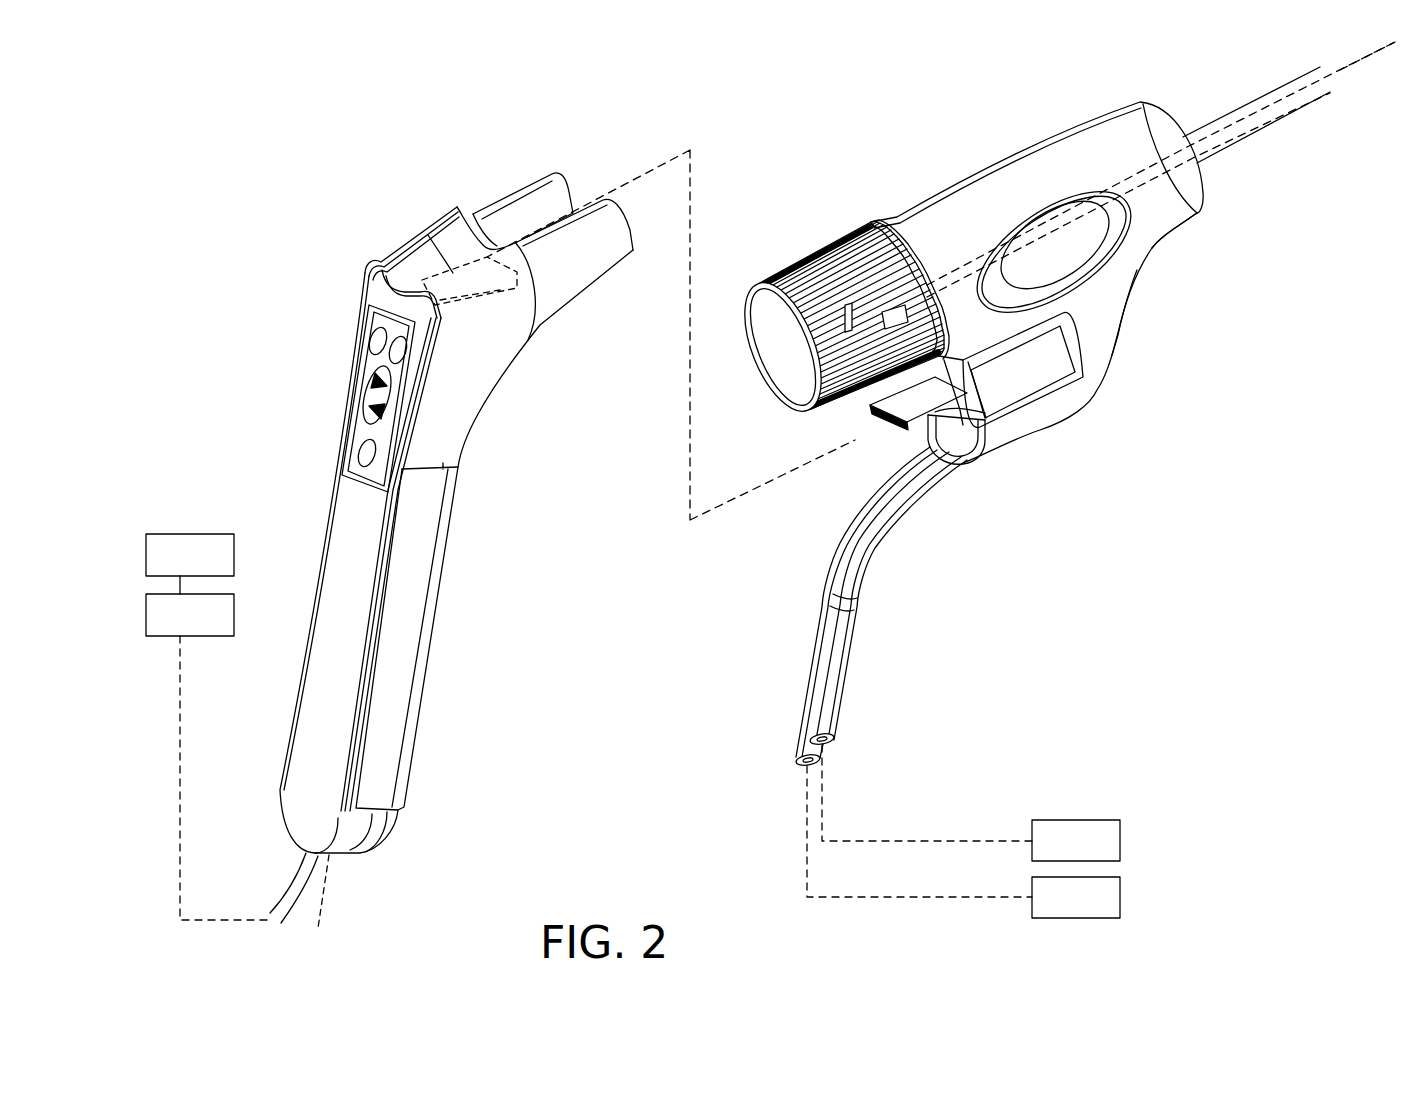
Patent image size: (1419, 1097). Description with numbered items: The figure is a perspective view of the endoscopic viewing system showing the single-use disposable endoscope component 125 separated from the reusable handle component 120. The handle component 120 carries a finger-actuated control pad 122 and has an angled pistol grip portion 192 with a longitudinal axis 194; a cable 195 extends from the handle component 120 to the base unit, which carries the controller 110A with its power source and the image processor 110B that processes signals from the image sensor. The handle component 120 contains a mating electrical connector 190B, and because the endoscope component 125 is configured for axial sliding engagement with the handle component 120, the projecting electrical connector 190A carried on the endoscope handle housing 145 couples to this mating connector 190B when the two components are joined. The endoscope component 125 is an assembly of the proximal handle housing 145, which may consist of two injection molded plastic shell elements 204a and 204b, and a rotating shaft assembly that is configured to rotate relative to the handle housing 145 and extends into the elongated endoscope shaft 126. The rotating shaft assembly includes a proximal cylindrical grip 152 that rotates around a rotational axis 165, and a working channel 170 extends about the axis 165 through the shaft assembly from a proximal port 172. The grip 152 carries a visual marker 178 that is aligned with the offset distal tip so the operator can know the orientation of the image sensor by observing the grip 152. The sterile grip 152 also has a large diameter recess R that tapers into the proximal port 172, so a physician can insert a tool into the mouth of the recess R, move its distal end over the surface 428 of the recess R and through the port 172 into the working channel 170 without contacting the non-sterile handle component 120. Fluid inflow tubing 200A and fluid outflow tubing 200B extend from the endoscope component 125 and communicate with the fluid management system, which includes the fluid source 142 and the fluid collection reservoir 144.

The handle component 120 is at (428, 198).
The finger-actuated control pad 122 is at (358, 417).
The mating electrical connector 190B is at (490, 297).
The angled pistol grip portion 192 is at (434, 590).
The axis 194 is at (325, 903).
The cable 195 is at (287, 890).
The controller 110A is at (190, 555).
The image processor 110B is at (207, 748).
The endoscope component 125 is at (960, 148).
The working channel 170 is at (1130, 170).
The shell element 204b is at (920, 200).
The shell element 204a is at (1152, 242).
The handle housing 145 is at (1112, 333).
The endoscope shaft 126 is at (1237, 110).
The rotational axis 165 is at (1353, 63).
The cylindrical grip 152 is at (798, 250).
The proximal port 172 is at (767, 278).
The visual marker 178 is at (912, 310).
The recess R is at (787, 360).
The surface 428 is at (788, 390).
The projecting electrical connector 190A is at (862, 430).
The fluid inflow tubing 200A is at (841, 713).
The fluid outflow tubing 200B is at (799, 745).
The fluid source 142 is at (971, 803).
The fluid collection reservoir 144 is at (963, 842).